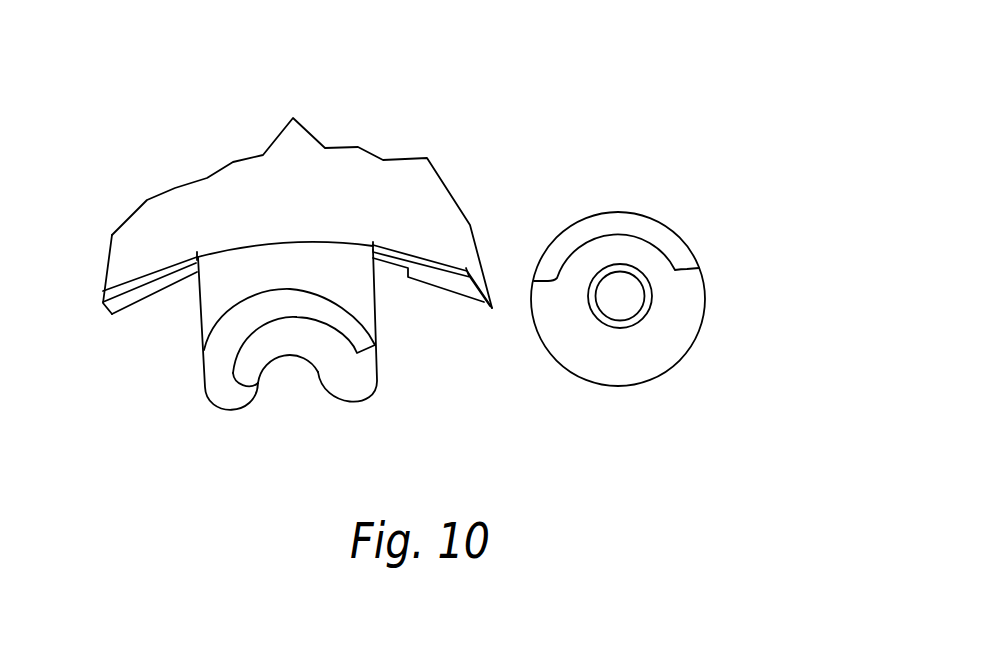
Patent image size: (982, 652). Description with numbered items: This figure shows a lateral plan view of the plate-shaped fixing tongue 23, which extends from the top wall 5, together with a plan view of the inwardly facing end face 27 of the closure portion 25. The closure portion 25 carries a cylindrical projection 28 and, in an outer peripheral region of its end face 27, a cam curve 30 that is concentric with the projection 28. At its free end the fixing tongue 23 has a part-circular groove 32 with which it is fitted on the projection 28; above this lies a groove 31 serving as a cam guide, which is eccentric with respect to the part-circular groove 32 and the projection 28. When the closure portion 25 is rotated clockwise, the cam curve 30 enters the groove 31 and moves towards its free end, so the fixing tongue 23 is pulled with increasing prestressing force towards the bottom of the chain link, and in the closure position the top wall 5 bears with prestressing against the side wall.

The top wall 5 is at (297, 258).
The fixing tongue 23 is at (298, 277).
The closure portion 25 is at (708, 296).
The inwardly facing end face 27 is at (682, 281).
The projection 28 is at (620, 328).
The cam curve 30 is at (612, 222).
The groove 31 is at (227, 347).
The part-circular groove 32 is at (292, 380).